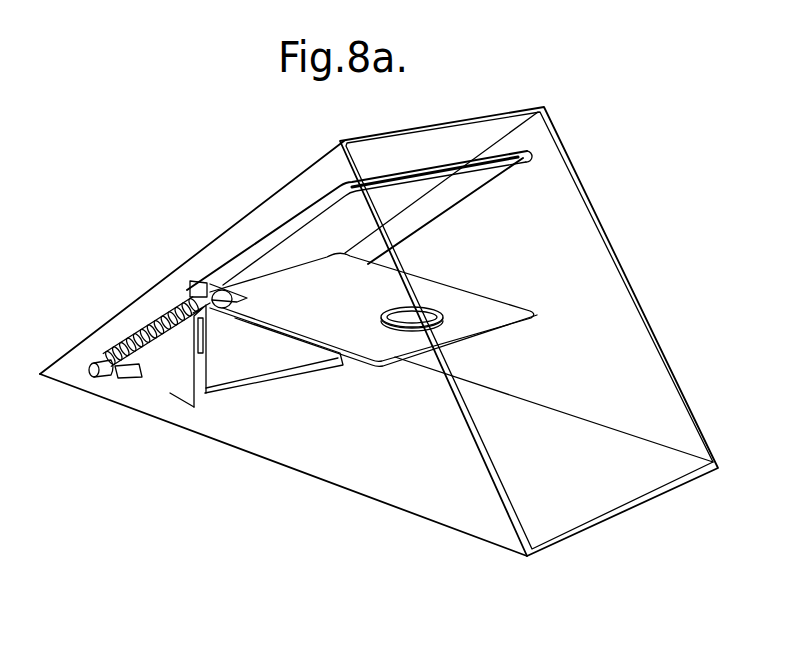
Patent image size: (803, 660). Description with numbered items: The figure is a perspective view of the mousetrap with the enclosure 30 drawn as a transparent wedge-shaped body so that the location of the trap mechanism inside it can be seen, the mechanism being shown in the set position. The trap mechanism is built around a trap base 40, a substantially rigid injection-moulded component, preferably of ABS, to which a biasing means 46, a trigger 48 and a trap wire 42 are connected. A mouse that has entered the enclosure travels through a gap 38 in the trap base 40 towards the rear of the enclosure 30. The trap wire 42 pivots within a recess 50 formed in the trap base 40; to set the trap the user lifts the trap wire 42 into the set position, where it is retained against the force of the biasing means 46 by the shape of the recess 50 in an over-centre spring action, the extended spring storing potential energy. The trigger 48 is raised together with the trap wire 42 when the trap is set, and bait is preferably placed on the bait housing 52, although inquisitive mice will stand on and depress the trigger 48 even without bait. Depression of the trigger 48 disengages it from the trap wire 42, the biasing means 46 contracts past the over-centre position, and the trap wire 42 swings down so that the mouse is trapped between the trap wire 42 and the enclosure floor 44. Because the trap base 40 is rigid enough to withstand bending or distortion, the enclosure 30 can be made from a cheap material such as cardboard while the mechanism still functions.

The enclosure 30 is at (284, 181).
The gap 38 is at (278, 362).
The trap base 40 is at (170, 378).
The trap wire 42 is at (452, 167).
The enclosure floor 44 is at (606, 487).
The biasing means 46 is at (138, 335).
The trigger 48 is at (503, 308).
The recess 50 is at (208, 350).
The bait housing 52 is at (411, 330).